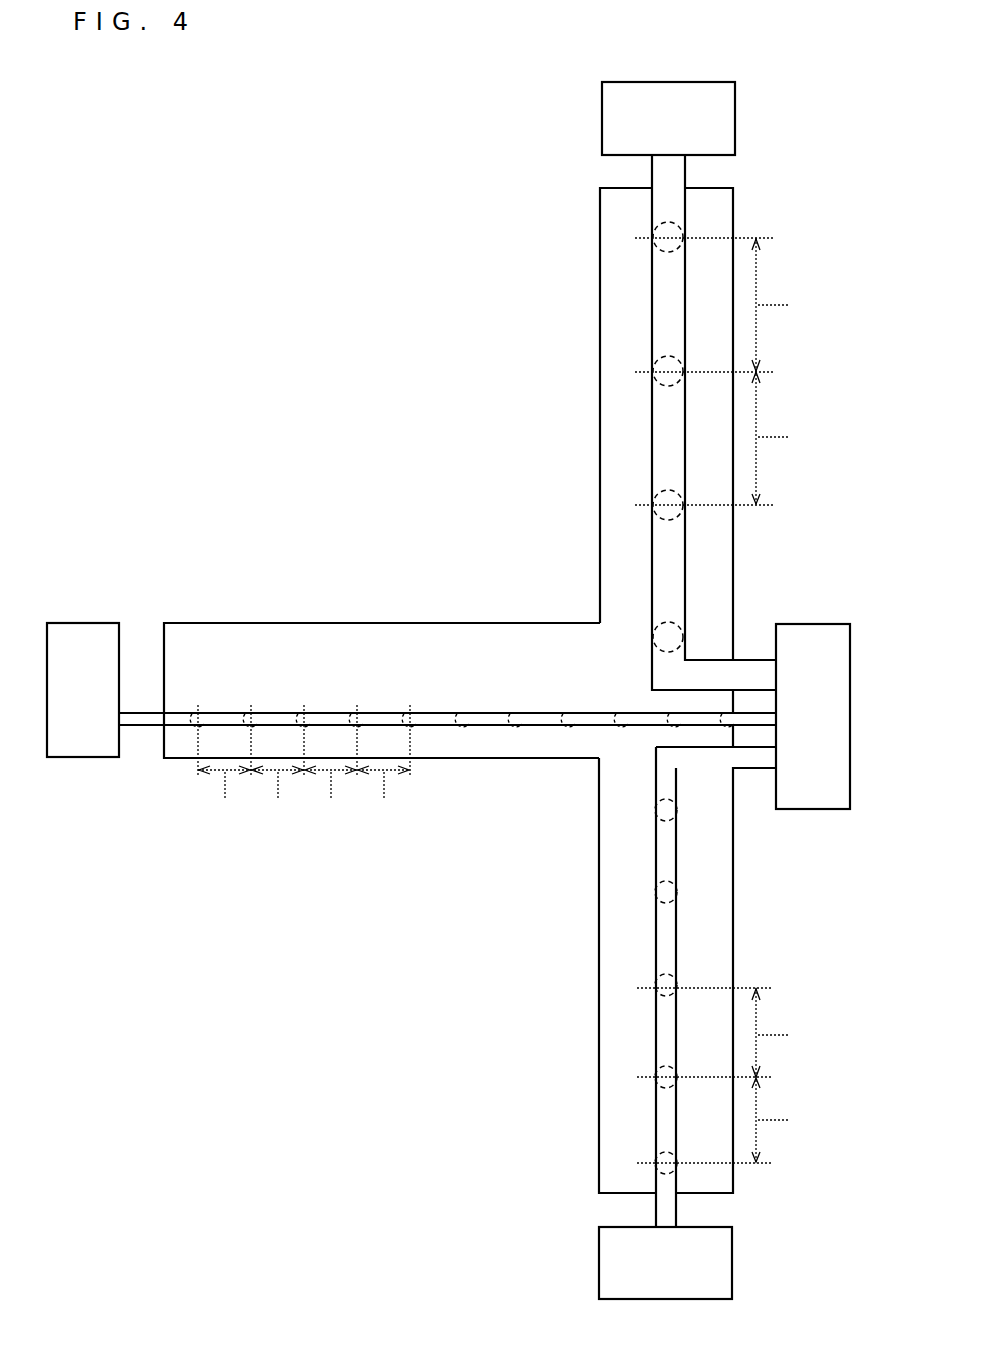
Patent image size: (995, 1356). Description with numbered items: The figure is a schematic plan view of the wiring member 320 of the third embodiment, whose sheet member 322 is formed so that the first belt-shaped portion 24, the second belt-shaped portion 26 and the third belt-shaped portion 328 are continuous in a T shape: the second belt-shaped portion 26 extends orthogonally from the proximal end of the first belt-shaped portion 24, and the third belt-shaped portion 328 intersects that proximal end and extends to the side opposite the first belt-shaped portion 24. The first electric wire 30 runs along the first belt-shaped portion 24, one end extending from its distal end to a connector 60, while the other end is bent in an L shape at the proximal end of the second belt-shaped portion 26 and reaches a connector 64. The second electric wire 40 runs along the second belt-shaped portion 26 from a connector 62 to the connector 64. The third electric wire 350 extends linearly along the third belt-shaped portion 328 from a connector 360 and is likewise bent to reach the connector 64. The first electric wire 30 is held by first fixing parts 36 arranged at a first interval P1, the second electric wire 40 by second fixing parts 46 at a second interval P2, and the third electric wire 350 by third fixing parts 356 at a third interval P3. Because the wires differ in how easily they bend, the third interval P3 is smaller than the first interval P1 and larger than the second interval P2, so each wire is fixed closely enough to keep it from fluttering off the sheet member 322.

The wiring member 320 is at (420, 369).
The connector 60 is at (736, 118).
The first belt-shaped portion 24 is at (734, 188).
The first electric wire 30 is at (687, 578).
The first fixing parts 36 is at (654, 365).
The sheet member 322 is at (736, 535).
The first interval P1 is at (729, 371).
The connector 64 is at (826, 622).
The connector 62 is at (84, 621).
The second belt-shaped portion 26 is at (182, 621).
The second electric wire 40 is at (485, 726).
The second fixing parts 46 is at (262, 712).
The second interval P2 is at (304, 766).
The third belt-shaped portion 328 is at (735, 890).
The third electric wire 350 is at (678, 931).
The third fixing parts 356 is at (656, 965).
The third interval P3 is at (730, 1075).
The connector 360 is at (734, 1263).